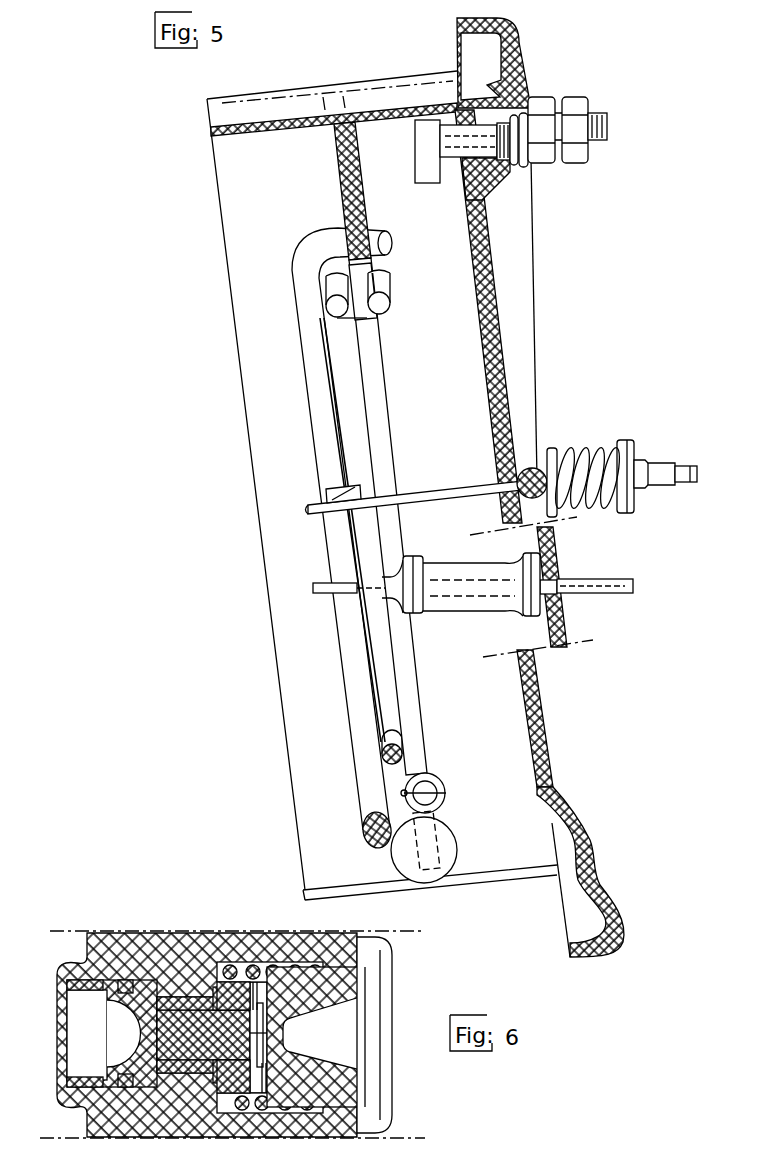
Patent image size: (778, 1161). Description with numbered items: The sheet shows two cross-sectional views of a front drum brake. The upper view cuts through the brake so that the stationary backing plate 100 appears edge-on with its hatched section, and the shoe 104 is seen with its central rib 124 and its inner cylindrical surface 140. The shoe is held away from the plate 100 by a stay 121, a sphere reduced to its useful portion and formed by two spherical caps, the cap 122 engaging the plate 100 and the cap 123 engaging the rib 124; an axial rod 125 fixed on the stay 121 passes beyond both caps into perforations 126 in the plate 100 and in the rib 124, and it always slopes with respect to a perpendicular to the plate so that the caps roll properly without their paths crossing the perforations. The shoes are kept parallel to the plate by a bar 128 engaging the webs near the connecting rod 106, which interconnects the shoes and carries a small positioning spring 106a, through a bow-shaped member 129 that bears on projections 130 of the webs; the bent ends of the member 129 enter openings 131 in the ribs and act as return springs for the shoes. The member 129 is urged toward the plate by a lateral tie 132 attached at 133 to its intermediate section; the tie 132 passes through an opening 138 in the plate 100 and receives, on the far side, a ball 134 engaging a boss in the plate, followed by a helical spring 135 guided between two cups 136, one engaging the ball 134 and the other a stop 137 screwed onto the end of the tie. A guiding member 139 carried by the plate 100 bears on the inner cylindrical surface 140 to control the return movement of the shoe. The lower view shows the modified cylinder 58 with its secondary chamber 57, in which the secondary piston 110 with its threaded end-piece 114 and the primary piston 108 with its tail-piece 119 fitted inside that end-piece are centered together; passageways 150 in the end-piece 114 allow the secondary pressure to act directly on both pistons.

In FIG. 5, the inner cylindrical surface 140 is at (228, 178).
In FIG. 5, the shoe 104 is at (280, 120).
In FIG. 5, the bow-shaped member 129 is at (310, 462).
In FIG. 5, the bar 128 is at (388, 742).
In FIG. 5, the opening 131 is at (356, 232).
In FIG. 5, the central rib 124 is at (420, 690).
In FIG. 5, the projection 130 is at (352, 319).
In FIG. 5, the stationary backing plate 100 is at (480, 248).
In FIG. 5, the guiding member 139 is at (437, 183).
In FIG. 5, the lateral tie 132 is at (427, 492).
In FIG. 5, the attachment point 133 is at (312, 509).
In FIG. 5, the opening 138 is at (495, 482).
In FIG. 5, the ball 134 is at (533, 468).
In FIG. 5, the cup 136 is at (555, 449).
In FIG. 5, the helical spring 135 is at (592, 445).
In FIG. 5, the stop 137 is at (680, 456).
In FIG. 5, the perforation 126 is at (385, 580).
In FIG. 5, the spherical cap 123 is at (405, 613).
In FIG. 5, the stay 121 is at (478, 612).
In FIG. 5, the spherical cap 122 is at (535, 616).
In FIG. 5, the rod 125 is at (625, 592).
In FIG. 5, the positioning spring 106a is at (447, 797).
In FIG. 5, the connecting rod 106 is at (480, 832).
In FIG. 6, the piston 108 is at (117, 990).
In FIG. 6, the cylinder 58 is at (200, 970).
In FIG. 6, the tail-piece 119 is at (170, 1047).
In FIG. 6, the threaded end-piece 114 is at (203, 1058).
In FIG. 6, the passageway 150 is at (265, 1033).
In FIG. 6, the secondary chamber 57 is at (312, 965).
In FIG. 6, the piston 110 is at (362, 1000).